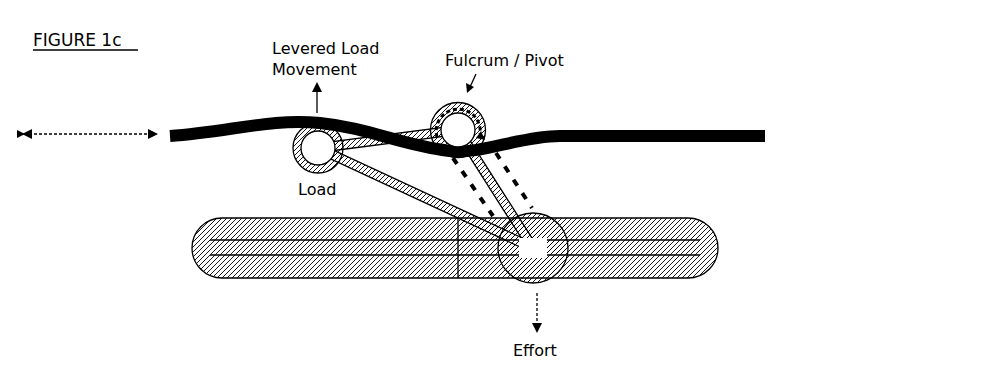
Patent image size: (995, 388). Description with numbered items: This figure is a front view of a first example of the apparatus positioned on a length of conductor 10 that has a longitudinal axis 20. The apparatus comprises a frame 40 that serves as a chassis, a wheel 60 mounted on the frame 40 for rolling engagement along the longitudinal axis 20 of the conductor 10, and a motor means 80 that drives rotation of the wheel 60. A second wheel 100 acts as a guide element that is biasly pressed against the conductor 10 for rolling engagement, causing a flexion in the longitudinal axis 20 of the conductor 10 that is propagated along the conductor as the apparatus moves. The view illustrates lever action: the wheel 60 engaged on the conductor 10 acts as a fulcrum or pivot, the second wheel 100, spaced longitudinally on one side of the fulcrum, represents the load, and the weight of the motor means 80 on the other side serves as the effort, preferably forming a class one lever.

The conductor 10 is at (479, 137).
The longitudinal axis 20 is at (90, 126).
The frame 40 is at (426, 189).
The wheel 60 is at (469, 126).
The motor means 80 is at (533, 248).
The second wheel 100 is at (302, 152).